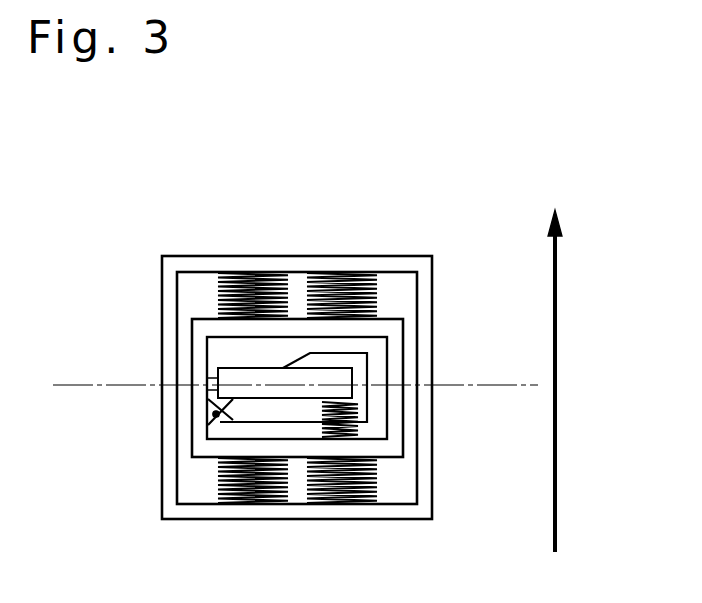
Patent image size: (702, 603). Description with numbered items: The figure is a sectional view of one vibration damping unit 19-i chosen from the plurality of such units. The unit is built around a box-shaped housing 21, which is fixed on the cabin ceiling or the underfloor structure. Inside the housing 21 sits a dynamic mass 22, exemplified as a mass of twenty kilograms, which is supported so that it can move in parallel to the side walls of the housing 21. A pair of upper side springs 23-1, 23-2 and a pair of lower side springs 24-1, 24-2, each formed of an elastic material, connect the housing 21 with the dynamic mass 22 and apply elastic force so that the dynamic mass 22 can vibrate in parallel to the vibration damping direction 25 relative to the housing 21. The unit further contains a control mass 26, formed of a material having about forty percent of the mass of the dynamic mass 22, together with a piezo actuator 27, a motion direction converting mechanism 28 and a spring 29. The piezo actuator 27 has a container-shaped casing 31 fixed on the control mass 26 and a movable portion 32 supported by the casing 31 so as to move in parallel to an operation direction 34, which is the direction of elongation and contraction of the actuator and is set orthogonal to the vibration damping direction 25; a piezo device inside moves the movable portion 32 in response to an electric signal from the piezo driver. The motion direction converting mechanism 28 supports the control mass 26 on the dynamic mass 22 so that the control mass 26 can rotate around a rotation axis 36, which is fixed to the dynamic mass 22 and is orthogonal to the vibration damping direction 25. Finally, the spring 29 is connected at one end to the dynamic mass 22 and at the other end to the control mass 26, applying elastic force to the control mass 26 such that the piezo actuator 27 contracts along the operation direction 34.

The vibration damping unit 19-i is at (385, 180).
The housing 21 is at (432, 282).
The dynamic mass 22 is at (403, 350).
The upper side spring 23-1 is at (265, 273).
The upper side spring 23-2 is at (352, 273).
The lower side spring 24-1 is at (258, 503).
The lower side spring 24-2 is at (345, 503).
The vibration damping direction 25 is at (557, 273).
The control mass 26 is at (367, 397).
The piezo actuator 27 is at (107, 323).
The motion direction converting mechanism 28 is at (218, 425).
The spring 29 is at (357, 432).
The casing 31 is at (252, 368).
The movable portion 32 is at (208, 378).
The operation direction 34 is at (493, 383).
The rotation axis 36 is at (212, 414).